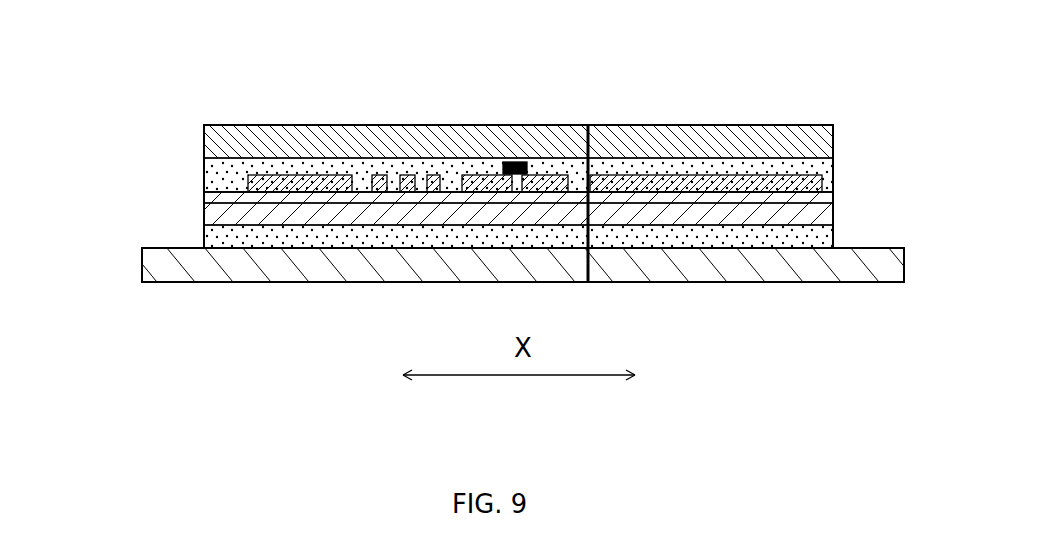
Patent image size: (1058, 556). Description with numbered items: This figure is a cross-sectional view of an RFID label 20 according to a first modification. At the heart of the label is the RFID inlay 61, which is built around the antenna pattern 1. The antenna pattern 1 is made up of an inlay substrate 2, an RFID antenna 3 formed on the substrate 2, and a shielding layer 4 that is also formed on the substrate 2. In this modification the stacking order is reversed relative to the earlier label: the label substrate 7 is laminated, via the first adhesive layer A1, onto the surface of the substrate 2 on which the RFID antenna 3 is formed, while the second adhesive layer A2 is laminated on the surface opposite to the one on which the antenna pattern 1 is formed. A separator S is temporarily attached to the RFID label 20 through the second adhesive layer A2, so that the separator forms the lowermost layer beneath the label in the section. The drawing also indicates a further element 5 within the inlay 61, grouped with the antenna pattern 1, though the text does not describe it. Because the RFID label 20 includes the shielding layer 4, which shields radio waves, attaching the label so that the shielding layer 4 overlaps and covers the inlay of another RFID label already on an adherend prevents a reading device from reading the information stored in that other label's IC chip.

The RFID label 20 is at (578, 88).
The label substrate 7 is at (833, 132).
The first adhesive layer A1 is at (833, 170).
The second adhesive layer A2 is at (833, 232).
The RFID inlay 61 is at (93, 113).
The sealing member 5 is at (510, 163).
The antenna pattern 1 is at (138, 146).
The RFID antenna 3 is at (248, 187).
The shielding layer 4 is at (623, 201).
The inlay substrate 2 is at (212, 216).
The separator S is at (904, 262).